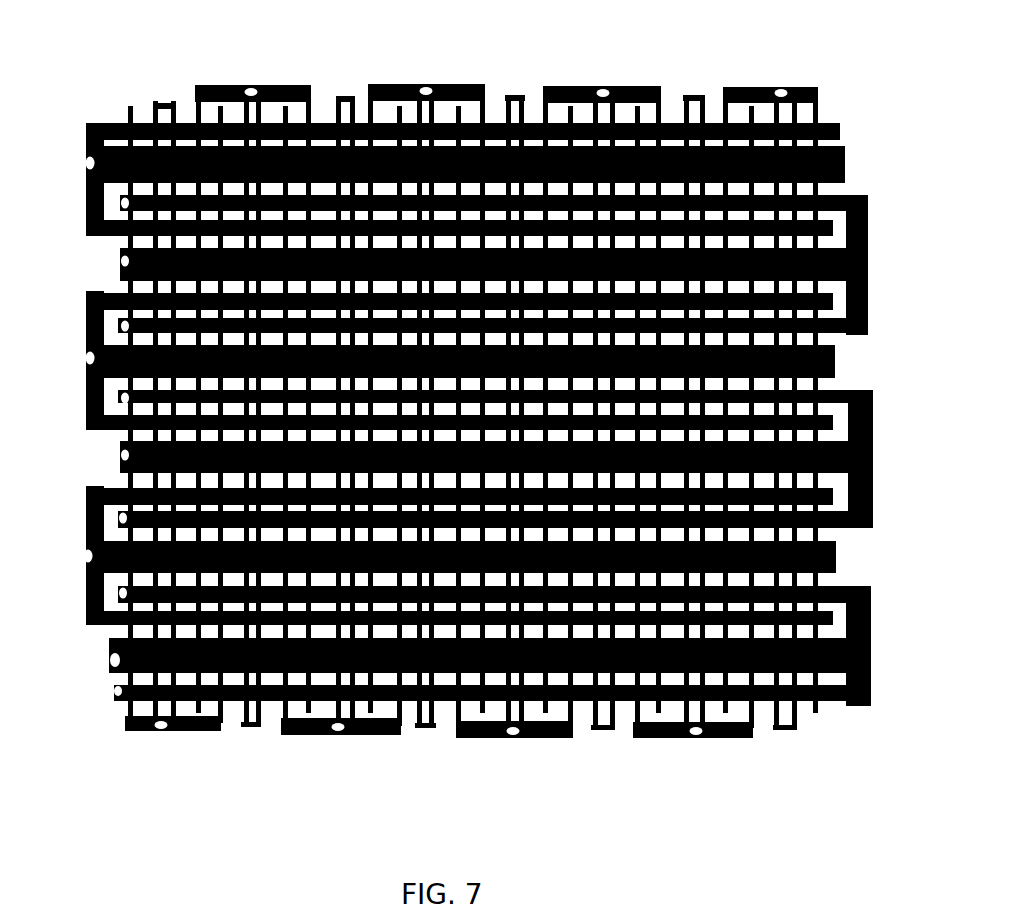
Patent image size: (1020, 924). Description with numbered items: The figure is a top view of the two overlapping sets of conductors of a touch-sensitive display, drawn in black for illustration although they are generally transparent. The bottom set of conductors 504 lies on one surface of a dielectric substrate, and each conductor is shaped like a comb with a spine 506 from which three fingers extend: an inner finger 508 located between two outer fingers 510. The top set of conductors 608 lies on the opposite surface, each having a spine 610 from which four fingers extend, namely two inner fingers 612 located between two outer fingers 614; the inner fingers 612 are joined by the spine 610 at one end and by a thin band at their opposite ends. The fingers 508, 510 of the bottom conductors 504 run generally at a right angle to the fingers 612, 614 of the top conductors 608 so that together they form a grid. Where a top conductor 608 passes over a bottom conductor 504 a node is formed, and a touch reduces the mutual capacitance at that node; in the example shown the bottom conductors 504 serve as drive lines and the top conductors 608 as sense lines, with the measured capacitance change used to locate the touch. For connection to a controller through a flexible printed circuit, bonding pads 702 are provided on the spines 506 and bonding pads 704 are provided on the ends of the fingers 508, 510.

The bottom set of conductors 504 is at (78, 113).
The spine 506 is at (73, 618).
The inner finger 508 is at (830, 548).
The outer fingers 510 is at (102, 617).
The top set of conductors 608 is at (308, 74).
The spine 610 is at (215, 77).
The inner fingers 612 is at (233, 703).
The outer fingers 614 is at (184, 103).
The bonding pads 702 is at (79, 156).
The bonding pads 704 is at (112, 252).